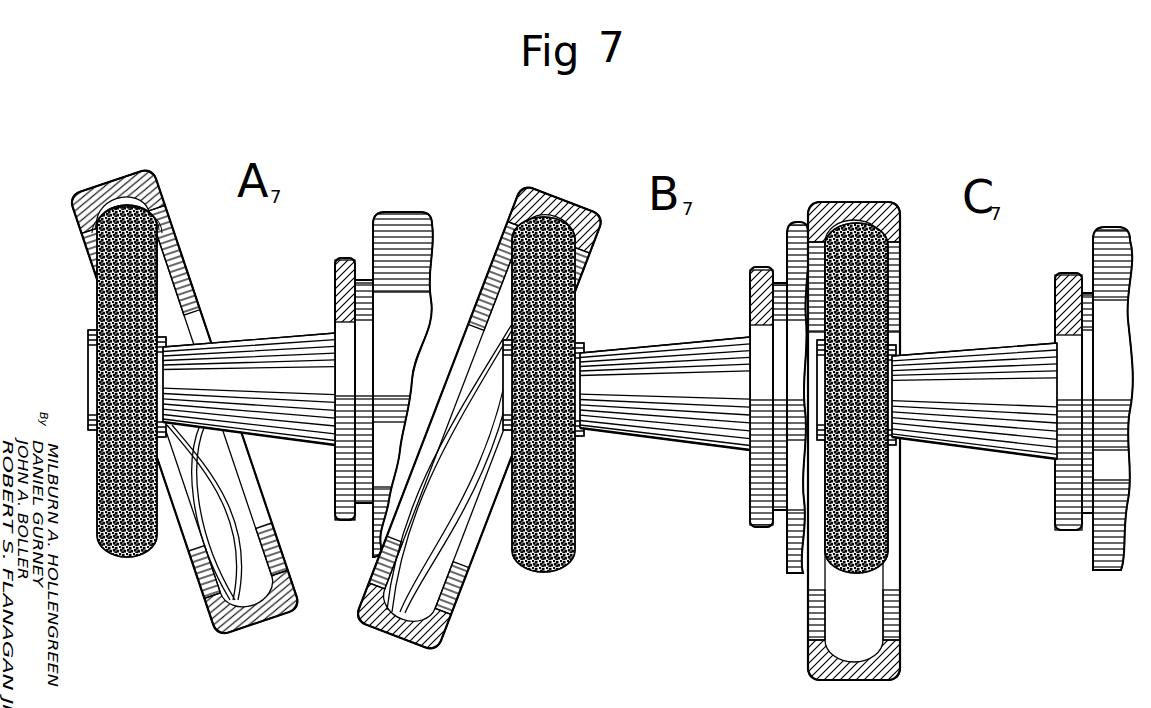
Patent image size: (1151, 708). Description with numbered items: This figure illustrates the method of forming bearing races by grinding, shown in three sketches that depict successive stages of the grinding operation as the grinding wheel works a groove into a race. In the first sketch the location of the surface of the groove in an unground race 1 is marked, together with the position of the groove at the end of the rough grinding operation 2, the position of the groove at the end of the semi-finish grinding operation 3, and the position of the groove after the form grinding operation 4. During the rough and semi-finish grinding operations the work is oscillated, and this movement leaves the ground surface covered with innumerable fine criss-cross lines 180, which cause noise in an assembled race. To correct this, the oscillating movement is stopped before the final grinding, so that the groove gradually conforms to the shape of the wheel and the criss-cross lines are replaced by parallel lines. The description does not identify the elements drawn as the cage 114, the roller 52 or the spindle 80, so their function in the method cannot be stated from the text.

The roller retaining cage 114 is at (68, 193).
The roller 52 is at (134, 558).
The tapered spindle 80 is at (263, 343).
The criss-cross lines 180 is at (220, 460).
The position of the groove after the form grinding operation 4 is at (153, 170).
The position of the groove at the end of the semi-finish grinding operation 3 is at (158, 190).
The position of the groove at the end of the rough grinding operation 2 is at (164, 203).
The location of the surface of the groove in an unground race 1 is at (168, 212).